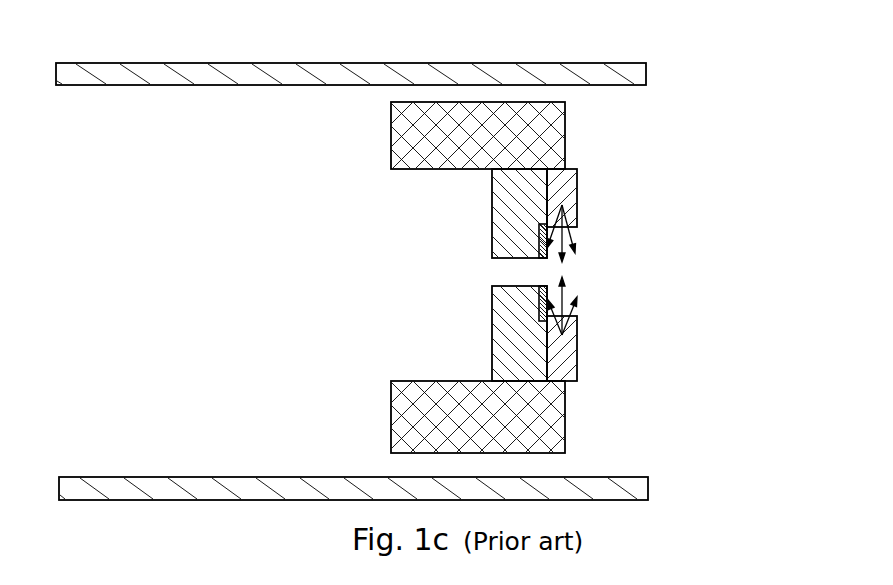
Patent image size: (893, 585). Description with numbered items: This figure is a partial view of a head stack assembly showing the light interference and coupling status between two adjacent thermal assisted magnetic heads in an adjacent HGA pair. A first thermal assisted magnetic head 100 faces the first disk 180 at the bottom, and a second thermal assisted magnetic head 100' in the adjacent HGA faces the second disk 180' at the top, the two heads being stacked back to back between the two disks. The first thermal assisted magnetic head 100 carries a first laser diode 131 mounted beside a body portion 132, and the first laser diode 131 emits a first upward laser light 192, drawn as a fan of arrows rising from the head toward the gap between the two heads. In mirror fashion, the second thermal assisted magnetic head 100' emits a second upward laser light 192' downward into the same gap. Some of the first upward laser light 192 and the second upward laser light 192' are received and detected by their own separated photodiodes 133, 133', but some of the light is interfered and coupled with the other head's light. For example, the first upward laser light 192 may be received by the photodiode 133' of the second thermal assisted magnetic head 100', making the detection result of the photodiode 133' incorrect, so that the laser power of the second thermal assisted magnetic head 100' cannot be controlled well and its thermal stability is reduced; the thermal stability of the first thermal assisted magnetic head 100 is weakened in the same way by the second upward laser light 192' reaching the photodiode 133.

The second disk 180' is at (398, 57).
The second thermal assisted magnetic head 100' is at (572, 177).
The photodiode 133' is at (472, 233).
The second upward laser light 192' is at (589, 233).
The first upward laser light 192 is at (587, 306).
The first thermal assisted magnetic head 100 is at (563, 364).
The light guide body 132 is at (498, 352).
The first laser diode 131 is at (563, 342).
The photodiode 133 is at (473, 298).
The first disk 180 is at (397, 470).